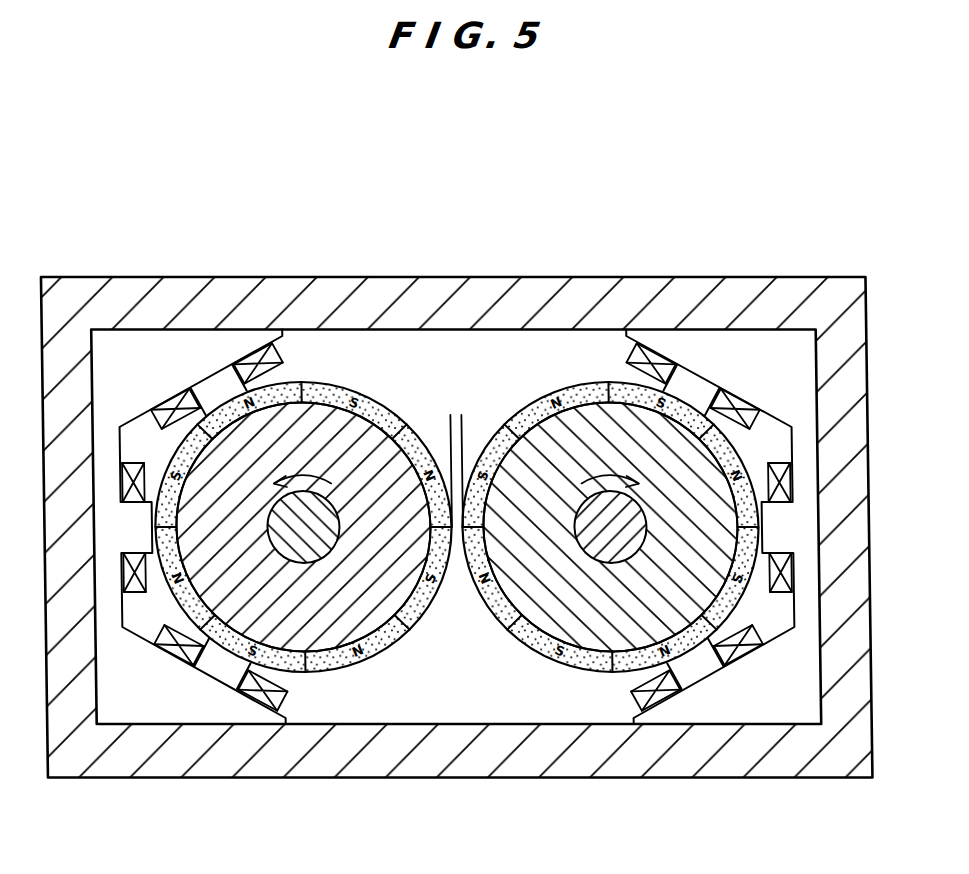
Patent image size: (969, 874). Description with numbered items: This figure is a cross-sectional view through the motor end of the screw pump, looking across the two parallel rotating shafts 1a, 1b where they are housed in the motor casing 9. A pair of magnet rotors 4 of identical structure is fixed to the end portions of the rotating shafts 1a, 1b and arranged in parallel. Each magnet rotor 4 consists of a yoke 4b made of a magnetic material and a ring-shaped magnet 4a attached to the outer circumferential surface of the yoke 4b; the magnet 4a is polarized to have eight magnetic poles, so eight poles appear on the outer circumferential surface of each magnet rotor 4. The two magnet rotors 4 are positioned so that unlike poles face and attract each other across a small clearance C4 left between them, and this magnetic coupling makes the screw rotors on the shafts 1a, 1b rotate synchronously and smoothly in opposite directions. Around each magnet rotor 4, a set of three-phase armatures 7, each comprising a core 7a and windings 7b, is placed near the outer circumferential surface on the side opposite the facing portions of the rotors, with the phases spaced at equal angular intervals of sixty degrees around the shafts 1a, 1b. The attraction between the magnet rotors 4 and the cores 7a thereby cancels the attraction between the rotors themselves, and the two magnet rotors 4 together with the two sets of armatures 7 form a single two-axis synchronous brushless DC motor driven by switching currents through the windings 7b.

The motor casing 9 is at (443, 300).
The three-phase armature 7 is at (449, 448).
The core 7a is at (134, 348).
The winding 7b is at (250, 352).
The magnet rotor 4 is at (456, 422).
The ring-shaped magnet 4a is at (305, 392).
The yoke 4b is at (288, 423).
The rotating shaft 1a is at (313, 553).
The rotating shaft 1b is at (593, 553).
The clearance C4 is at (424, 426).